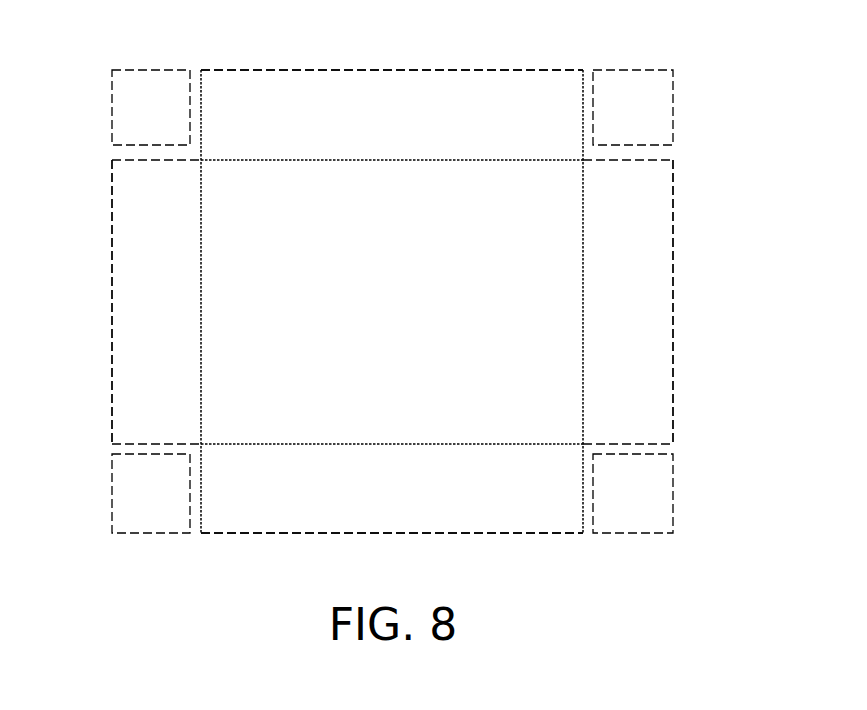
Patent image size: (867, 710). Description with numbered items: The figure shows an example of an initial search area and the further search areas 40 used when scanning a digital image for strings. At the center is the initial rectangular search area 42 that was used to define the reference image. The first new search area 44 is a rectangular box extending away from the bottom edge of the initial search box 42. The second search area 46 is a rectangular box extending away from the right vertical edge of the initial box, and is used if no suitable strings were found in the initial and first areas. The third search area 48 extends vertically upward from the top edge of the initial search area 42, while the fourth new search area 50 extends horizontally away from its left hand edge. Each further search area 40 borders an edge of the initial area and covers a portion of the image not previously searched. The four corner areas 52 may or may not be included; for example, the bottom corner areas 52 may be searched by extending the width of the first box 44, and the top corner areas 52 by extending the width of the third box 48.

The further search area 40 is at (510, 70).
The initial search area 42 is at (361, 160).
The first new search area 44 is at (492, 533).
The second search area 46 is at (673, 354).
The third search area 48 is at (433, 70).
The fourth new search area 50 is at (112, 354).
The corner area 52 is at (112, 109).